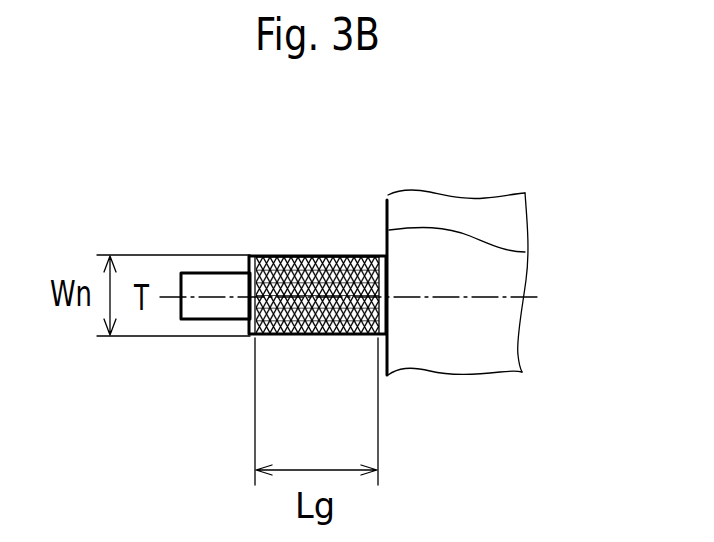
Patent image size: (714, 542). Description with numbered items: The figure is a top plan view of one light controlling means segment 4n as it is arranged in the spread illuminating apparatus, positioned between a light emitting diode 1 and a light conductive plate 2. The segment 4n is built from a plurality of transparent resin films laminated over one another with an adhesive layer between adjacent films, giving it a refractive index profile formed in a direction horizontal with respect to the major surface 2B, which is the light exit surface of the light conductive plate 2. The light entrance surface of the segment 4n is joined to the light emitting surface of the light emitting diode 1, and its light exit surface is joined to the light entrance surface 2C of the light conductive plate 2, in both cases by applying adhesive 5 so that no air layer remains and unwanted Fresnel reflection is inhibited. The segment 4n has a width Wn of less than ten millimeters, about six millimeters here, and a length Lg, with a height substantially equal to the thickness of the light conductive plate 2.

The light emitting diode 1 is at (217, 308).
The light conductive plate 2 is at (497, 394).
The major surface 2B is at (431, 354).
The light entrance surface 2C is at (525, 252).
The light controlling means segment 4n is at (313, 338).
The adhesive 5 is at (252, 256).